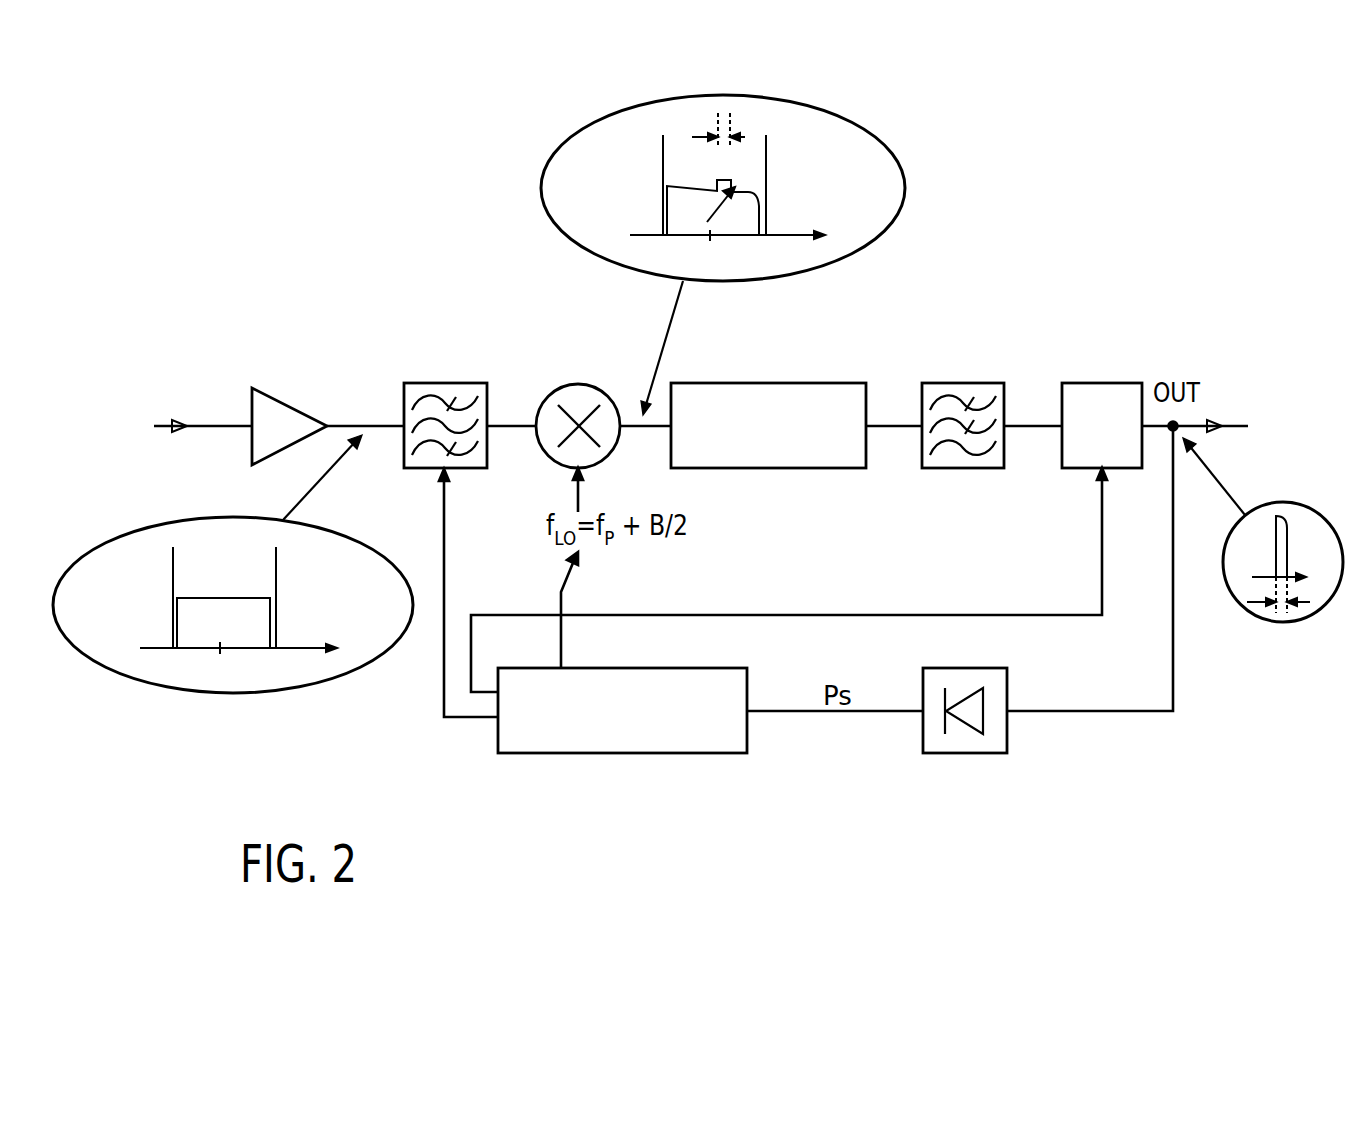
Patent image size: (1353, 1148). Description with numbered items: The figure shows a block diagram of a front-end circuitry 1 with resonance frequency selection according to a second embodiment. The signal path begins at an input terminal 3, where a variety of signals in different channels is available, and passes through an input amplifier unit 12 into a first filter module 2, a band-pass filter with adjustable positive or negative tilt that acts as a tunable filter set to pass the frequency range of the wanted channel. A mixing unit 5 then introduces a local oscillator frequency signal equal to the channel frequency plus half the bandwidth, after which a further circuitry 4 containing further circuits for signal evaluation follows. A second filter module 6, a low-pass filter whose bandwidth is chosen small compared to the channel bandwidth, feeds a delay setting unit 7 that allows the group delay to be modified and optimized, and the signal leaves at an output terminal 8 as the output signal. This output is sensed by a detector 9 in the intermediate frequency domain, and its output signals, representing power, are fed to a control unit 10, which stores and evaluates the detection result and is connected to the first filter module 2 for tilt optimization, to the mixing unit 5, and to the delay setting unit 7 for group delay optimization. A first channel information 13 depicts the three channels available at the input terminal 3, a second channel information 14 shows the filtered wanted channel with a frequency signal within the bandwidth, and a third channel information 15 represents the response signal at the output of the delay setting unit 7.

The front-end circuitry 1 is at (1042, 188).
The first filter module 2 is at (417, 383).
The input terminal 3 is at (183, 433).
The further circuitry 4 is at (762, 383).
The mixing unit 5 is at (579, 384).
The second filter module 6 is at (932, 383).
The delay setting unit 7 is at (1097, 383).
The output terminal 8 is at (1218, 420).
The detector 9 is at (962, 754).
The control unit 10 is at (601, 754).
The input amplifier unit 12 is at (282, 402).
The first channel information 13 is at (153, 688).
The second channel information 14 is at (905, 185).
The third channel information 15 is at (1260, 622).